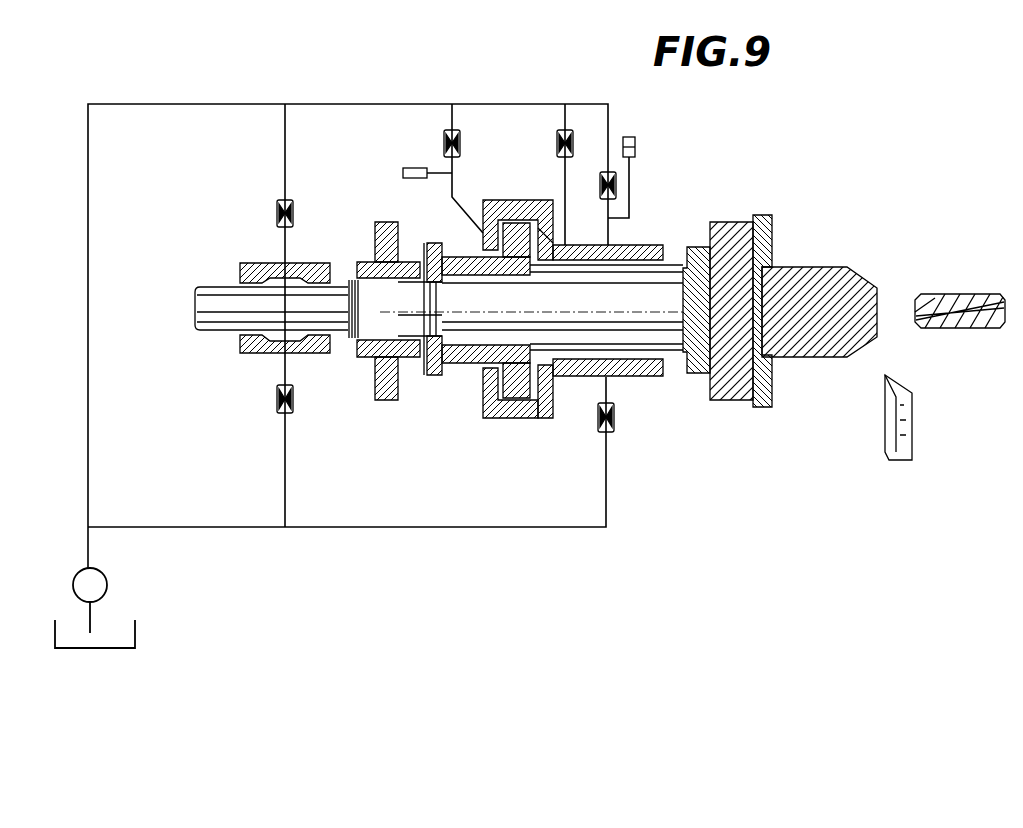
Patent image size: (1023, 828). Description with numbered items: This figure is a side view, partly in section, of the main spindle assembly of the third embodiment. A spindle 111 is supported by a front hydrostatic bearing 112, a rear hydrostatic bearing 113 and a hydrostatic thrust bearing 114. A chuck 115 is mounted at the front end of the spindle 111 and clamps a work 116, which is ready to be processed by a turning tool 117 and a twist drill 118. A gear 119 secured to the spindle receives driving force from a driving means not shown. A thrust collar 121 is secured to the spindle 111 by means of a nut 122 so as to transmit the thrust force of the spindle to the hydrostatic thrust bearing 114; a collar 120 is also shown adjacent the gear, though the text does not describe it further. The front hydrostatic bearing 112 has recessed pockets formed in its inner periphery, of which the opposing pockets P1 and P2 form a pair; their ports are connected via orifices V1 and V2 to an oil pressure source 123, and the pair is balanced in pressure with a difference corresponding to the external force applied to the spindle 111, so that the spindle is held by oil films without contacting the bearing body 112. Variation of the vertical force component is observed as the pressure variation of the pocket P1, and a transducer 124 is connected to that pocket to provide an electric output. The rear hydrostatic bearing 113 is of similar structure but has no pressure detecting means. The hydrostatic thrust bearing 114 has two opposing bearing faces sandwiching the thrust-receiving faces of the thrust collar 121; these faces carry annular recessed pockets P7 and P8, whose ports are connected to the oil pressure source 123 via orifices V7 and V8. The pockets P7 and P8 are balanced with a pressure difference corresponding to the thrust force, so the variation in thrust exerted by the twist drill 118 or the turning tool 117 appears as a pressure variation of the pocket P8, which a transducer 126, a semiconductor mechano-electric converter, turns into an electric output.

The spindle 111 is at (205, 287).
The front hydrostatic bearing 112 is at (660, 244).
The rear hydrostatic bearing 113 is at (250, 355).
The hydrostatic thrust bearing 114 is at (505, 199).
The chuck 115 is at (737, 222).
The work 116 is at (812, 267).
The turning tool 117 is at (888, 434).
The twist drill 118 is at (953, 293).
The gear 119 is at (391, 401).
The collar 120 is at (365, 358).
The thrust collar 121 is at (514, 384).
The nut 122 is at (438, 377).
The oil pressure source 123 is at (108, 582).
The transducer 124 is at (635, 141).
The transducer 126 is at (402, 170).
The orifice V1 is at (600, 184).
The orifice V2 is at (615, 421).
The orifice V7 is at (556, 139).
The orifice V8 is at (443, 138).
The recessed pocket P1 is at (637, 244).
The recessed pocket P2 is at (633, 363).
The annular recessed pocket P7 is at (541, 412).
The annular recessed pocket P8 is at (484, 395).